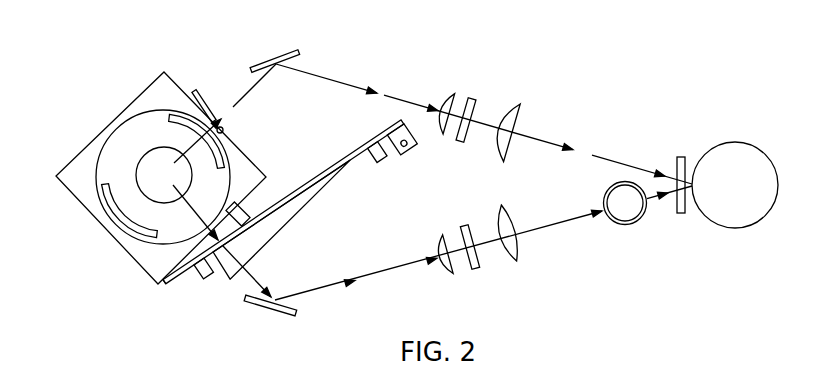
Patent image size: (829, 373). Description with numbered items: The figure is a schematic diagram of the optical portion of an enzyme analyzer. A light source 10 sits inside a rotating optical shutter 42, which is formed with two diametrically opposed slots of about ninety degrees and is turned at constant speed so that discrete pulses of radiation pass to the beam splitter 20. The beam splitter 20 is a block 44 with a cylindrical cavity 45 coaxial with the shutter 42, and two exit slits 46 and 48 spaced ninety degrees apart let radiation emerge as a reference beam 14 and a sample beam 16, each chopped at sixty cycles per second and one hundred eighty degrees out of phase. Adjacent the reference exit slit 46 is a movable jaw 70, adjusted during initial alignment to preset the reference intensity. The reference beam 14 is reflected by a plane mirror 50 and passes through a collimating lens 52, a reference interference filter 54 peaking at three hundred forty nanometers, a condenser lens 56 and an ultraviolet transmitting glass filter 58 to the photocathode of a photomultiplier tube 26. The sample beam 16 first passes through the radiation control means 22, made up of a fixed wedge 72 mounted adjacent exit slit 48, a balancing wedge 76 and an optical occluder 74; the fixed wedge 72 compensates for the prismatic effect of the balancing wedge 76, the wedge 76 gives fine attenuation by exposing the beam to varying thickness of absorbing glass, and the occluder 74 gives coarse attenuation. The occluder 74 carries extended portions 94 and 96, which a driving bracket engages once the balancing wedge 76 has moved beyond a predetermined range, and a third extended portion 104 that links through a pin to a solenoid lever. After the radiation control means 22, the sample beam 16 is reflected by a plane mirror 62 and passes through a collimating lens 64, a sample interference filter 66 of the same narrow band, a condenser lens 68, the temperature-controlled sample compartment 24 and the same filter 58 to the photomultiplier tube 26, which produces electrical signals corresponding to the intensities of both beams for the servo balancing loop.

The source of radiation 10 is at (147, 179).
The reference beam 14 is at (234, 107).
The sample beam 16 is at (256, 281).
The beam splitter 20 is at (181, 171).
The radiation control means 22 is at (283, 201).
The sample compartment 24 is at (628, 225).
The photomultiplier tube 26 is at (733, 143).
The rotating optical shutter 42 is at (226, 148).
The block 44 is at (151, 84).
The cylindrical cavity 45 is at (101, 153).
The exit slit 46 is at (223, 129).
The exit slit 48 is at (236, 213).
The plane mirror 50 is at (283, 55).
The collimating lens 52 is at (450, 94).
The reference 340 nanometer interference filter 54 is at (472, 98).
The condenser lens 56 is at (516, 103).
The ultraviolet transmitting glass filter 58 is at (678, 157).
The plane mirror 62 is at (266, 308).
The collimating lens 64 is at (452, 275).
The sample 340 nanometer interference filter 66 is at (475, 270).
The condenser lens 68 is at (516, 263).
The movable jaw 70 is at (202, 92).
The fixed wedge 72 is at (183, 273).
The optical occluder 74 is at (376, 137).
The balancing wedge 76 is at (279, 233).
The extended portion 94 is at (380, 161).
The extended portion 96 is at (200, 280).
The third extended portion 104 is at (404, 157).